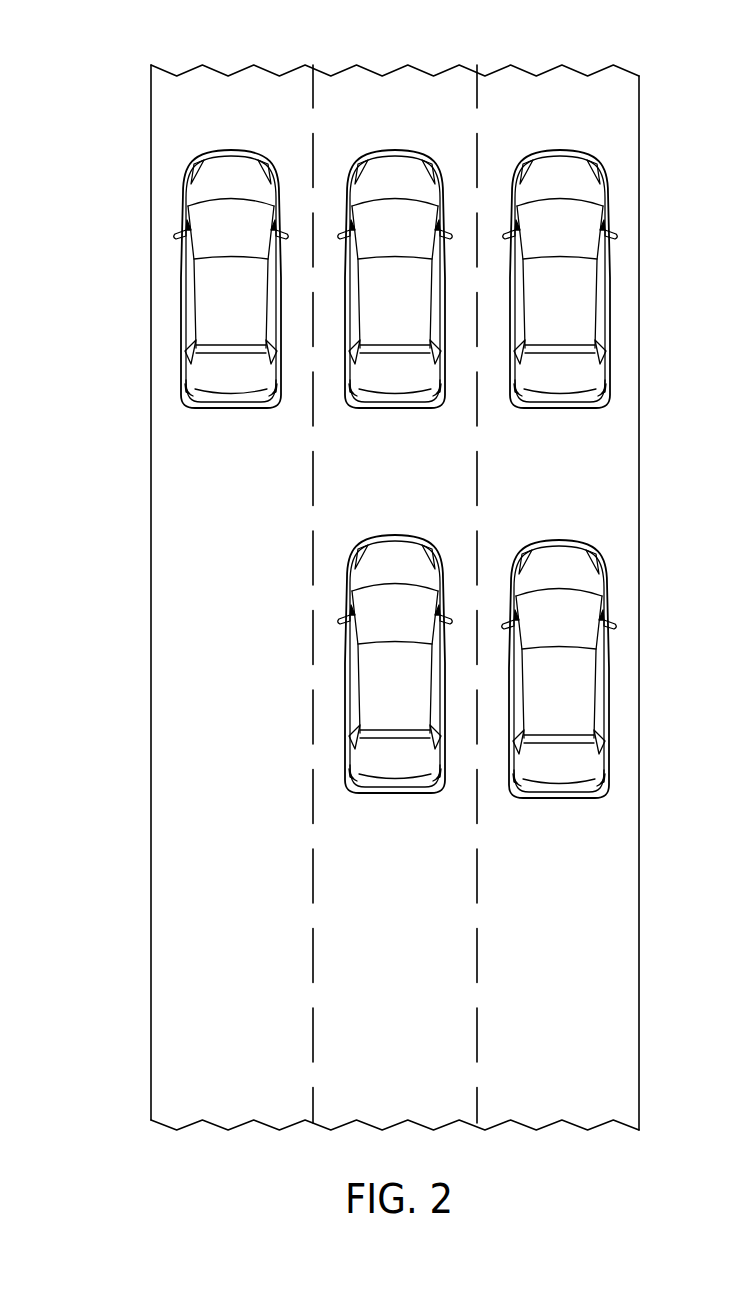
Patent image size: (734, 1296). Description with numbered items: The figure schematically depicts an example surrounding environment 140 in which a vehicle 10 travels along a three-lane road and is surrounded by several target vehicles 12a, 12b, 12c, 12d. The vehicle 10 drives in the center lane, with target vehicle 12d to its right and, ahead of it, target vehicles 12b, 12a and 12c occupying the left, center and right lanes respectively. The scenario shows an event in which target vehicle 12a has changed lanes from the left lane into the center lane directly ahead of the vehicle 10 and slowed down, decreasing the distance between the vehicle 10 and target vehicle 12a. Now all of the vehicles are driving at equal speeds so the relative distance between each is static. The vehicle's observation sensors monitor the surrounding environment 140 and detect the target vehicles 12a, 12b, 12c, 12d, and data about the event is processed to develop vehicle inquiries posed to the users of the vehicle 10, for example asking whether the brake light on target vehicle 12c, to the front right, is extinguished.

The surrounding environment 140 is at (339, 567).
The vehicle 10 is at (393, 793).
The target vehicle 12a is at (400, 148).
The target vehicle 12b is at (230, 148).
The target vehicle 12c is at (557, 148).
The target vehicle 12d is at (556, 797).